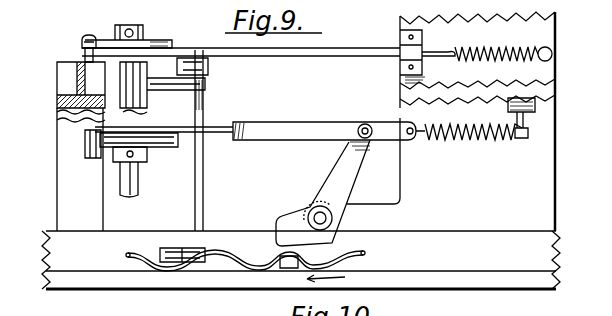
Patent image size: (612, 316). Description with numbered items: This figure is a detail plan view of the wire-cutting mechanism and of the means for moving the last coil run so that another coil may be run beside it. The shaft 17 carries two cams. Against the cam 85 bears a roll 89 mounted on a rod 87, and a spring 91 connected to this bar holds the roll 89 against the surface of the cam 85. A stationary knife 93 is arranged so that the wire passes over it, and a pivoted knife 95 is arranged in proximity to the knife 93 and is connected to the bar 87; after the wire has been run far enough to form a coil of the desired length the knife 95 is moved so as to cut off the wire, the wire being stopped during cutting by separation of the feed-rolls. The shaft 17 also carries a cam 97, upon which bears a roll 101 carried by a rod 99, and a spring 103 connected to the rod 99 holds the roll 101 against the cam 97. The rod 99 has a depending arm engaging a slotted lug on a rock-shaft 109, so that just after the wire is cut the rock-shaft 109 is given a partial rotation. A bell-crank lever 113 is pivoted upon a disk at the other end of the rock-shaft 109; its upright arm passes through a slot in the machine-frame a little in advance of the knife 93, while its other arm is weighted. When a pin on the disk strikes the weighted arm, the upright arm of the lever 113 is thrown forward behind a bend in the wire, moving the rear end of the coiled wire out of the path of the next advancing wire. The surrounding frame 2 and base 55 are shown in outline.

The frame plate 2 is at (552, 173).
The shaft 17 is at (139, 178).
The base plate 55 is at (157, 282).
The cam 85 is at (168, 148).
The rod 87 is at (237, 141).
The roll 89 is at (88, 152).
The spring 91 is at (450, 141).
The stationary knife 93 is at (288, 268).
The pivoted knife 95 is at (330, 182).
The cam 97 is at (158, 41).
The rod 99 is at (266, 56).
The roll 101 is at (82, 41).
The spring 103 is at (478, 50).
The rock-shaft 109 is at (203, 204).
The bell-crank lever 113 is at (180, 253).